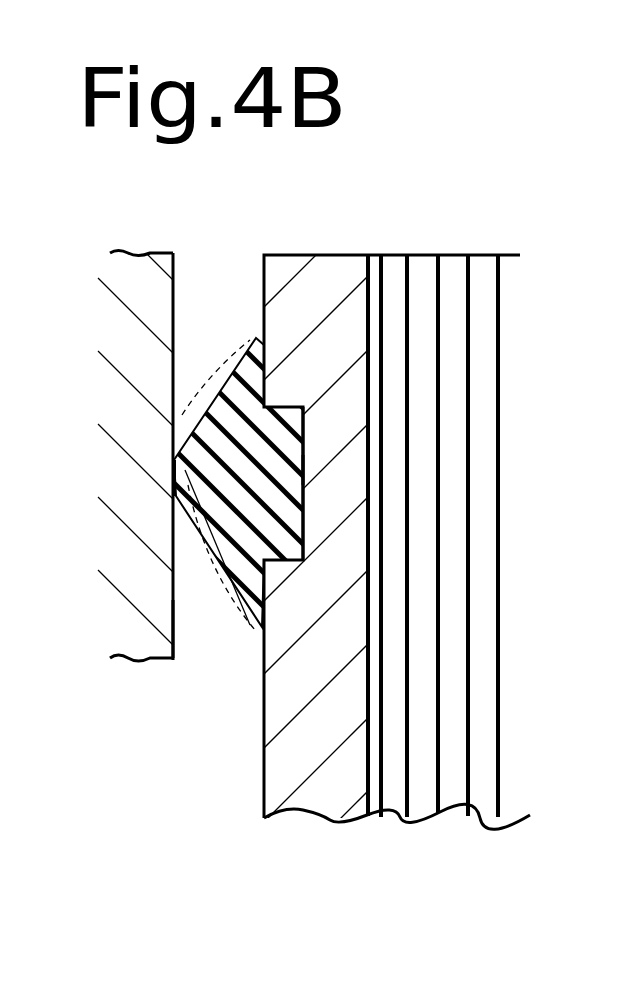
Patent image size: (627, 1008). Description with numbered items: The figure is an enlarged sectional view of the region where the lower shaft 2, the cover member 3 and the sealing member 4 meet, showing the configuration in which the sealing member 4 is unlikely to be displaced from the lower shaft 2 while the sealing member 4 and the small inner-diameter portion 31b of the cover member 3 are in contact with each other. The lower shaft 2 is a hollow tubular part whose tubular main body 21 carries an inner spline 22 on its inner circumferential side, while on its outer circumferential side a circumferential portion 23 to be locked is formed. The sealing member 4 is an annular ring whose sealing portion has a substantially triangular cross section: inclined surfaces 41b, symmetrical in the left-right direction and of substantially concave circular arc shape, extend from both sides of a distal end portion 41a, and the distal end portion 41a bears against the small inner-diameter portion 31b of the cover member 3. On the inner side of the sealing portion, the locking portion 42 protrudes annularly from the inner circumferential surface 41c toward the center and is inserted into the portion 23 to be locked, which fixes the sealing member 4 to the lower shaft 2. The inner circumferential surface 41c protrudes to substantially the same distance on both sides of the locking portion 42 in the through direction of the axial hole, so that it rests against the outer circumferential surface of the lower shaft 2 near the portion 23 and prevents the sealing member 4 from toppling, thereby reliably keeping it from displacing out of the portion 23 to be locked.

The lower shaft 2 is at (375, 543).
The cover member 3 is at (158, 451).
The sealing member 4 is at (305, 453).
The tubular main body 21 is at (262, 775).
The inner spline 22 is at (368, 335).
The portion to be locked 23 is at (303, 470).
The small inner-diameter portion 31b is at (176, 622).
The distal end portion 41a is at (177, 490).
The inclined surfaces 41b is at (208, 404).
The inner circumferential surface 41c is at (265, 384).
The locking portion 42 is at (270, 522).